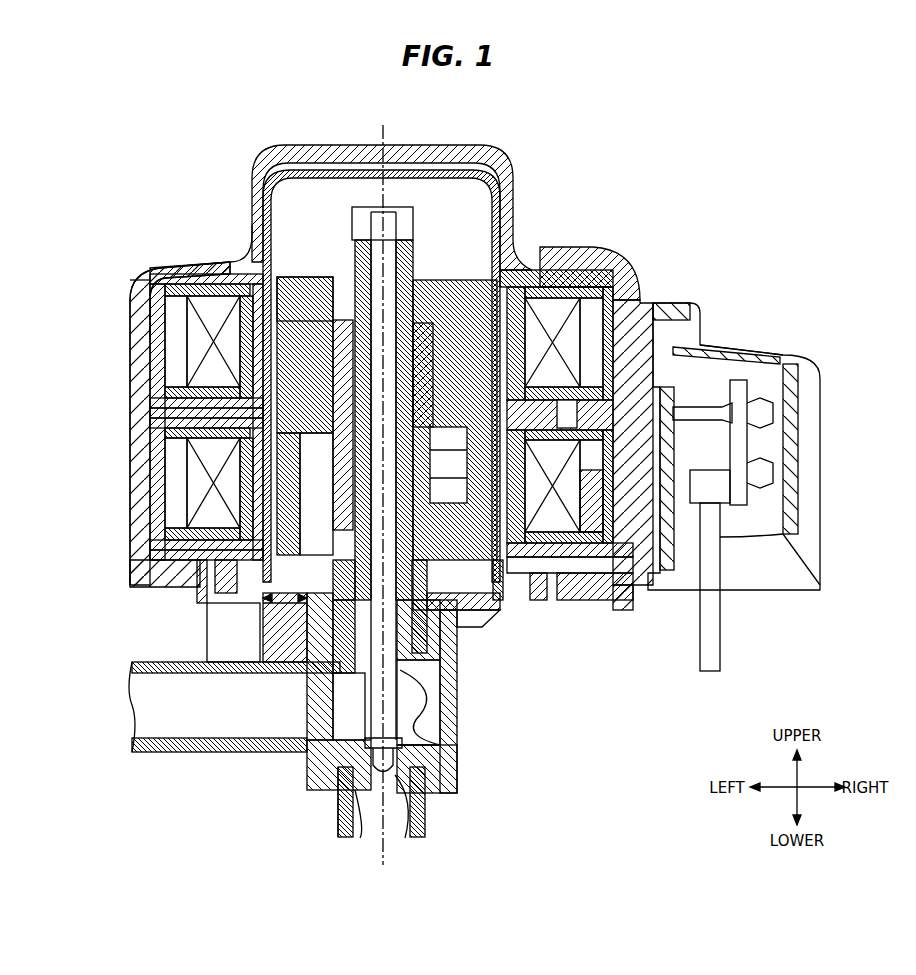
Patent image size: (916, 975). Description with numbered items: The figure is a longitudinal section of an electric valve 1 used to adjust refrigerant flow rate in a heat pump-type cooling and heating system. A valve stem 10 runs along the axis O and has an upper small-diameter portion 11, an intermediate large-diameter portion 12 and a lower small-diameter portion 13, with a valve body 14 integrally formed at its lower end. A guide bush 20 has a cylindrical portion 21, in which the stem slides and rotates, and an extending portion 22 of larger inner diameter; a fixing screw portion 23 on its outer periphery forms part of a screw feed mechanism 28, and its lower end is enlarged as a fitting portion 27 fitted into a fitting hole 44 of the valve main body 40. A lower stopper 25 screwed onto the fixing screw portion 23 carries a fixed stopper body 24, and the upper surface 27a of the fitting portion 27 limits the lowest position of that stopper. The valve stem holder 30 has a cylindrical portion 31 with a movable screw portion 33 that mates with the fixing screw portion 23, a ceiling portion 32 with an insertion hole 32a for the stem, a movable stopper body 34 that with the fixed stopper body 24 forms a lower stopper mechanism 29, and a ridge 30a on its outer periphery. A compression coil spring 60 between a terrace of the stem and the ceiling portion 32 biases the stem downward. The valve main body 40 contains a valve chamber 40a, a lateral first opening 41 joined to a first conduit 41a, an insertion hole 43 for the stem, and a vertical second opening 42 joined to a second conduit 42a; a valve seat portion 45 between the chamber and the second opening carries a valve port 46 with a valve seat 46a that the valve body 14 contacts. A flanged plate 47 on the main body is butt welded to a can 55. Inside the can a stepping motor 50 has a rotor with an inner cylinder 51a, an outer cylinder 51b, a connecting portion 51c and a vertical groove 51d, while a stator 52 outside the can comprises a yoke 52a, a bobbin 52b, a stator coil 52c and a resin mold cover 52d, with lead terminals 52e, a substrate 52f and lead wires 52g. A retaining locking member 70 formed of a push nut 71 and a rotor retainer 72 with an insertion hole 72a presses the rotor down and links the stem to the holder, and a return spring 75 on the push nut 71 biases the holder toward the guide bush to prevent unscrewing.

The electric valve 1 is at (742, 200).
The axis O is at (388, 128).
The valve stem 10 is at (356, 250).
The upper small-diameter portion 11 is at (390, 263).
The intermediate large-diameter portion 12 is at (152, 464).
The lower small-diameter portion 13 is at (431, 716).
The valve body 14 is at (393, 836).
The guide bush 20 is at (531, 362).
The cylindrical portion 21 is at (436, 452).
The extending portion 22 is at (152, 403).
The fixing screw portion 23 is at (152, 506).
The fixed stopper body 24 is at (503, 601).
The lower stopper 25 is at (485, 614).
The fitting portion 27 is at (430, 645).
The upper surface 27a is at (337, 590).
The screw feed mechanism 28 is at (152, 490).
The lower stopper mechanism 29 is at (531, 517).
The valve stem holder 30 is at (220, 262).
The ridge 30a is at (165, 376).
The cylindrical portion 31 is at (152, 414).
The ceiling portion 32 is at (598, 260).
The insertion hole 32a is at (166, 350).
The movable screw portion 33 is at (436, 478).
The movable stopper body 34 is at (532, 444).
The valve main body 40 is at (460, 696).
The valve chamber 40a is at (349, 706).
The first opening 41 is at (320, 673).
The first conduit 41a is at (162, 661).
The second opening 42 is at (425, 800).
The second conduit 42a is at (338, 825).
The insertion hole 43 is at (431, 672).
The fitting hole 44 is at (431, 648).
The valve seat portion 45 is at (431, 738).
The valve port 46 is at (361, 836).
The valve seat 46a is at (366, 740).
The flanged plate 47 is at (270, 605).
The stepping motor 50 is at (518, 193).
The inner cylinder 51a is at (323, 305).
The outer cylinder 51b is at (512, 256).
The connecting portion 51c is at (312, 282).
The vertical groove 51d is at (340, 322).
The stator 52 is at (146, 264).
The yoke 52a is at (153, 266).
The bobbin 52b is at (150, 303).
The stator coil 52c is at (150, 325).
The resin mold cover 52d is at (130, 281).
The lead terminals 52e is at (694, 406).
The substrate 52f is at (740, 506).
The lead wires 52g is at (720, 655).
The can 55 is at (504, 181).
The compression coil spring 60 is at (237, 451).
The retaining locking member 70 is at (421, 284).
The push nut 71 is at (405, 250).
The rotor retainer 72 is at (419, 310).
The insertion hole 72a is at (378, 210).
The return spring 75 is at (414, 212).